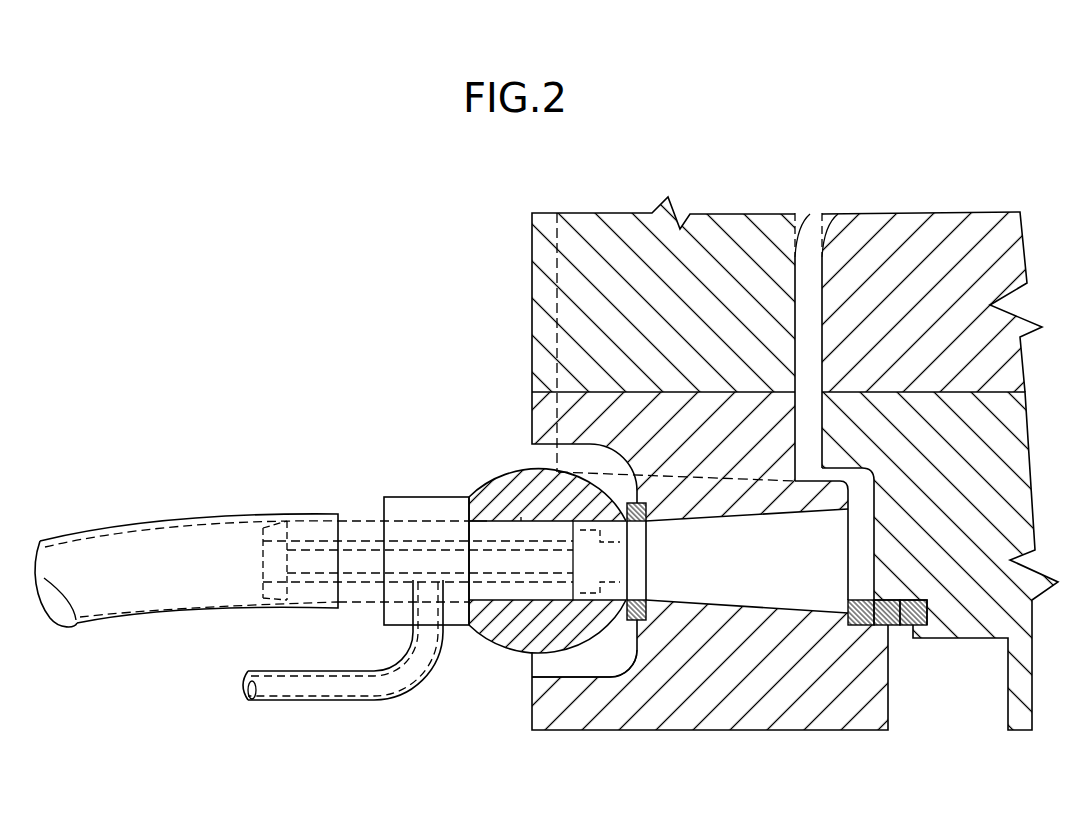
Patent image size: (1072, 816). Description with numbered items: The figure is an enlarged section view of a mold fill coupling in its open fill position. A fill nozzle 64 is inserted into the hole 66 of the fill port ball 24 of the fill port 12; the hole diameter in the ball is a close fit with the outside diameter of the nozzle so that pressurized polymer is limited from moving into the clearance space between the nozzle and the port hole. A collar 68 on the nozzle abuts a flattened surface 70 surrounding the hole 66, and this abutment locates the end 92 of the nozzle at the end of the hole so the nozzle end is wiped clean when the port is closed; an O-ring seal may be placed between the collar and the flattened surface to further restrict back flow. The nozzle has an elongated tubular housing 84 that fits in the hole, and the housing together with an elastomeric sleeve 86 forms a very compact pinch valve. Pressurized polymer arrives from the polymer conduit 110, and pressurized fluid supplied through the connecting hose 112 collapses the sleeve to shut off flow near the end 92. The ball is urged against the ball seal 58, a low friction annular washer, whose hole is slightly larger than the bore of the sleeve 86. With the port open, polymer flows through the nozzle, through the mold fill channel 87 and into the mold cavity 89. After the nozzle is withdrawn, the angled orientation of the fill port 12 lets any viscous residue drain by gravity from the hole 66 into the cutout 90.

The fill port 12 is at (484, 461).
The fill port ball 24 is at (528, 651).
The ball seal 58 is at (637, 622).
The fill nozzle 64 is at (356, 489).
The hole 66 is at (521, 517).
The collar 68 is at (428, 497).
The flattened surface 70 is at (472, 630).
The tubular housing 84 is at (487, 520).
The sleeve 86 is at (407, 542).
The mold fill channel 87 is at (760, 607).
The mold cavity 89 is at (810, 275).
The cutout 90 is at (568, 678).
The end of nozzle 92 is at (632, 560).
The polymer conduit 110 is at (127, 618).
The connecting hose 112 is at (290, 702).